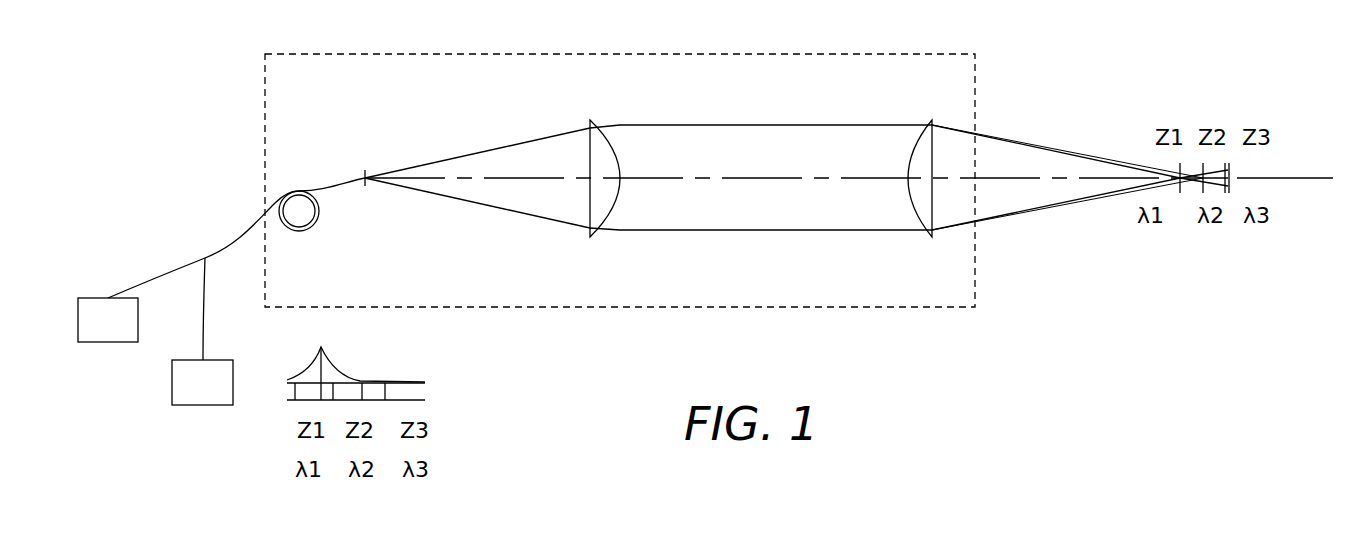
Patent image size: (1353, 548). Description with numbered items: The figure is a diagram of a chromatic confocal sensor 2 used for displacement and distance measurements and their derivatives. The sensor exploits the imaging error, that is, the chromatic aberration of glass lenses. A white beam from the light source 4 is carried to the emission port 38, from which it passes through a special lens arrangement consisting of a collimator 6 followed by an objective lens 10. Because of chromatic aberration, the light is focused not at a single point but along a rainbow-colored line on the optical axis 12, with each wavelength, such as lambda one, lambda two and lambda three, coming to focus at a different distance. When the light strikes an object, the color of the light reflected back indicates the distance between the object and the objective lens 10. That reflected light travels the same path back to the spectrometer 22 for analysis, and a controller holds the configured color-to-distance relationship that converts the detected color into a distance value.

The chromatic confocal sensor 2 is at (720, 54).
The light source 4 is at (103, 343).
The spectrometer 22 is at (205, 407).
The emission port 38 is at (364, 177).
The collimator 6 is at (593, 240).
The objective lens 10 is at (927, 240).
The optical axis 12 is at (1287, 178).